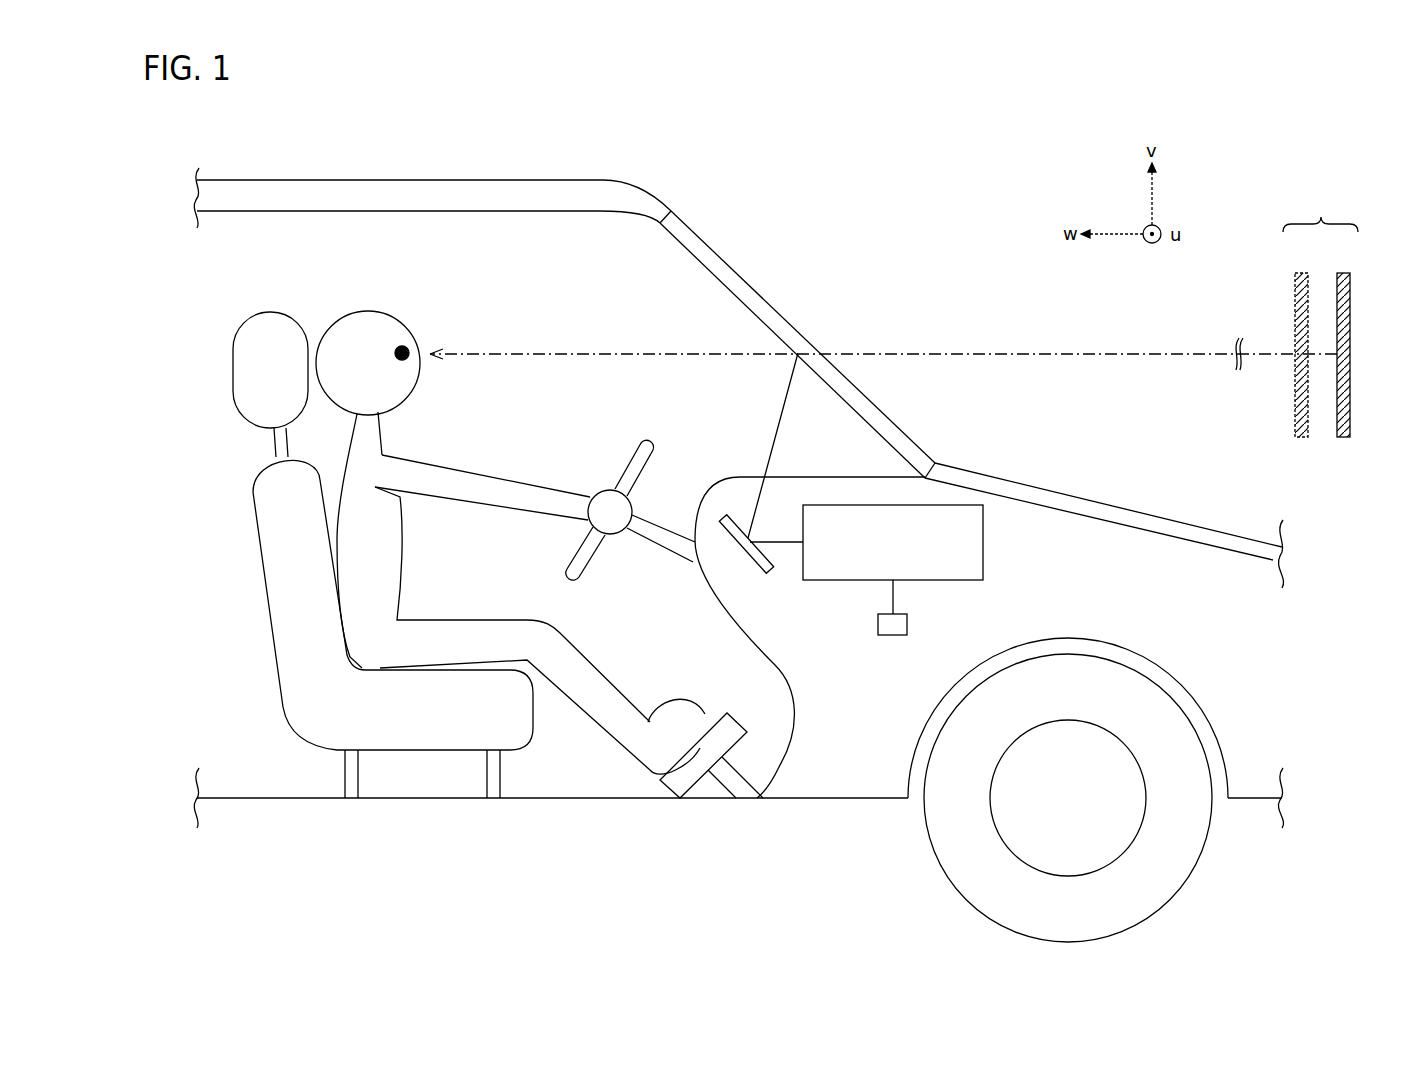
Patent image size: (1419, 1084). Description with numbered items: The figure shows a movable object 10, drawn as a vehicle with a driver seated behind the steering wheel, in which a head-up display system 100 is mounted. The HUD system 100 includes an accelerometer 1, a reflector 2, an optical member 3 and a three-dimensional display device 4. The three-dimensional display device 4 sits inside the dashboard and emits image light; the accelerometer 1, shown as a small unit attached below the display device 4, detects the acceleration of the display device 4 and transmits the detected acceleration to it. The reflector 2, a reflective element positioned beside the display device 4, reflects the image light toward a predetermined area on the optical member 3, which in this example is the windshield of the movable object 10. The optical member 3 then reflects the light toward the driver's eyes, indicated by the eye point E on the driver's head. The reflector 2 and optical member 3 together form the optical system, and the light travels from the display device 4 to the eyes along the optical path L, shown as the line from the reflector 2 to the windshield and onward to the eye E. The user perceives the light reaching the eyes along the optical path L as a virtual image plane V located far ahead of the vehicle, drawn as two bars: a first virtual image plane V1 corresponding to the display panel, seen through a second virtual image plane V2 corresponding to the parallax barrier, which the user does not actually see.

The head-up display (HUD) system 100 is at (848, 210).
The movable object 10 is at (345, 178).
The optical member 3 is at (704, 230).
The eye of driver E is at (405, 348).
The optical path L is at (781, 415).
The three-dimensional (3D) display device 4 is at (985, 543).
The reflector 2 is at (768, 573).
The accelerometer 1 is at (891, 640).
The virtual image plane V is at (1320, 210).
The first virtual image plane V1 is at (1343, 272).
The second virtual image plane V2 is at (1301, 272).